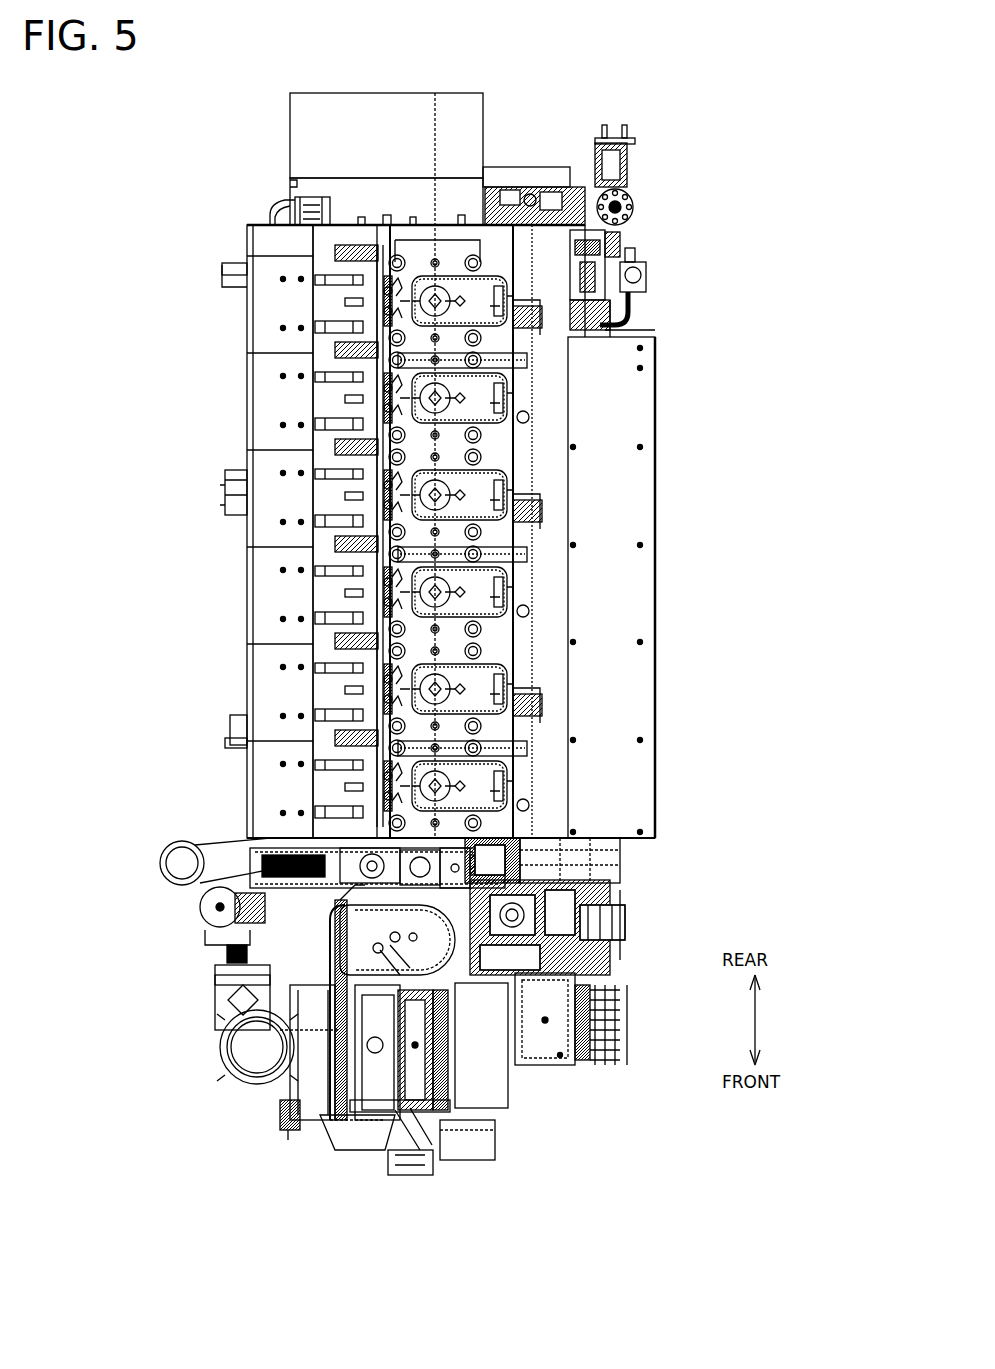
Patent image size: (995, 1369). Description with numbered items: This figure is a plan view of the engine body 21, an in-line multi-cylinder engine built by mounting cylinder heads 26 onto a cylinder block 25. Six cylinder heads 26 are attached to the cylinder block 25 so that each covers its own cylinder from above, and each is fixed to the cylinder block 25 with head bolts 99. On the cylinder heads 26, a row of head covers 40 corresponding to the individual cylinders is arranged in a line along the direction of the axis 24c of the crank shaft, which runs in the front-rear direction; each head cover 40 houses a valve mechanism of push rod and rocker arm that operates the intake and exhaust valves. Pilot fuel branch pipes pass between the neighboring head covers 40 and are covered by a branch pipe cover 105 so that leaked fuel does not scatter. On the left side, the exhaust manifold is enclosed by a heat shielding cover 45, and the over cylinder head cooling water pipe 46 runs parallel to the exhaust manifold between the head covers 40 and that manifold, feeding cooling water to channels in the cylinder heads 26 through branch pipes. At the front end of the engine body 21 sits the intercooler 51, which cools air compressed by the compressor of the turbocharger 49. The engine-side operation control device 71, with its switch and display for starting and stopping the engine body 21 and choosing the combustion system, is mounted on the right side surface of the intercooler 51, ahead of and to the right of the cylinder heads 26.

The engine body 21 is at (742, 152).
The axis 24c is at (440, 132).
The cylinder block 25 is at (358, 218).
The cylinder head 26 is at (483, 263).
The head cover 40 is at (490, 300).
The heat shielding cover 45 is at (264, 393).
The over cylinder head cooling water pipe 46 is at (340, 462).
The turbocharger 49 is at (300, 1105).
The intercooler 51 is at (352, 1135).
The engine-side operation control device 71 is at (548, 1058).
The head bolt 99 is at (407, 253).
The branch pipe cover 105 is at (522, 358).